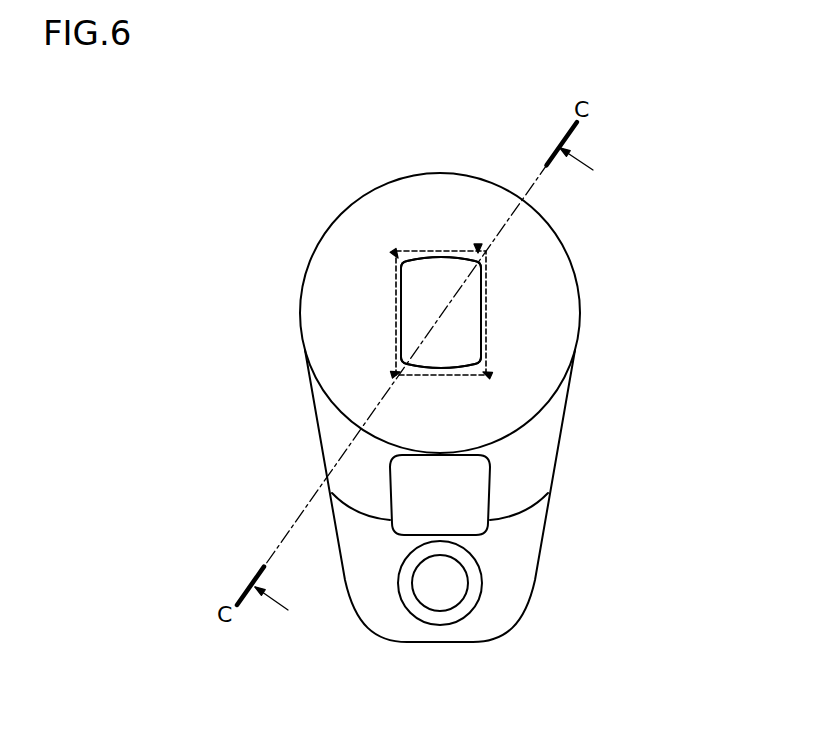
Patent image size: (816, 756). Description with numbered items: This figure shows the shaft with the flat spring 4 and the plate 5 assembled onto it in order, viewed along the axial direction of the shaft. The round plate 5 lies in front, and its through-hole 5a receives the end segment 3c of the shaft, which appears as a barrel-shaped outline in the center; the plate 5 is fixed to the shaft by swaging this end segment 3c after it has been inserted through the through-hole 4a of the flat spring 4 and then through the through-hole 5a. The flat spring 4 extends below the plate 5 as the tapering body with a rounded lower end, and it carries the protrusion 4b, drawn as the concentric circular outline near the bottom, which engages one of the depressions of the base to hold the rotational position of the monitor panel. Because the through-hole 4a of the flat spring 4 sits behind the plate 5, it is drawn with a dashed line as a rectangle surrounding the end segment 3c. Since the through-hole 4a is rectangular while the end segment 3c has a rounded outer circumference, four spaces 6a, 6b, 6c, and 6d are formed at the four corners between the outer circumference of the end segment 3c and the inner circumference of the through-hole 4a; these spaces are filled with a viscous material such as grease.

The end segment 3c is at (413, 300).
The flat spring 4 is at (393, 625).
The through-hole 4a is at (487, 290).
The protrusion 4b is at (452, 590).
The plate 5 is at (327, 315).
The through-hole 5a is at (398, 336).
The space 6a is at (483, 372).
The space 6b is at (400, 372).
The space 6c is at (398, 258).
The space 6d is at (478, 253).